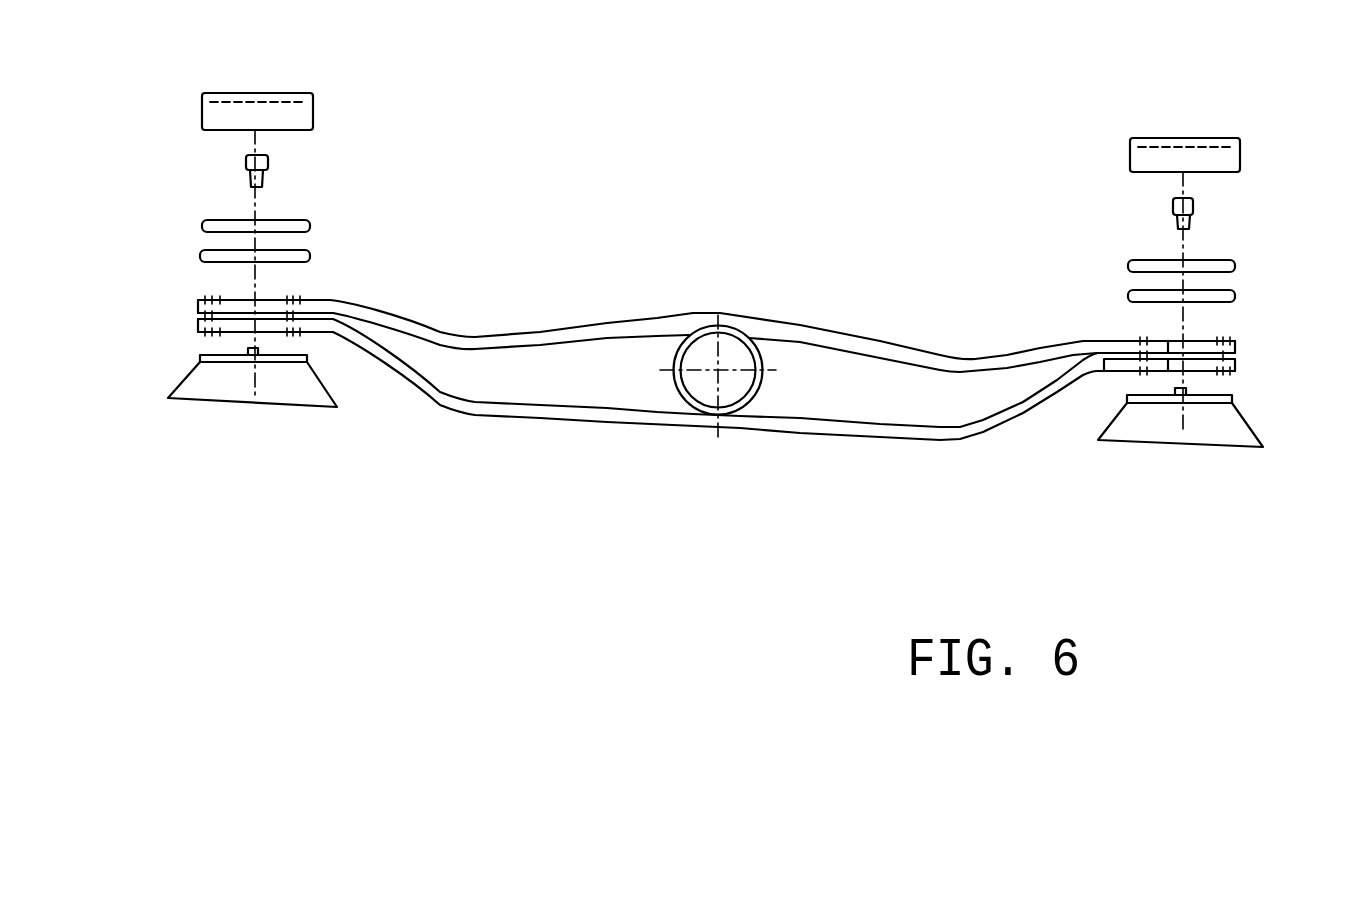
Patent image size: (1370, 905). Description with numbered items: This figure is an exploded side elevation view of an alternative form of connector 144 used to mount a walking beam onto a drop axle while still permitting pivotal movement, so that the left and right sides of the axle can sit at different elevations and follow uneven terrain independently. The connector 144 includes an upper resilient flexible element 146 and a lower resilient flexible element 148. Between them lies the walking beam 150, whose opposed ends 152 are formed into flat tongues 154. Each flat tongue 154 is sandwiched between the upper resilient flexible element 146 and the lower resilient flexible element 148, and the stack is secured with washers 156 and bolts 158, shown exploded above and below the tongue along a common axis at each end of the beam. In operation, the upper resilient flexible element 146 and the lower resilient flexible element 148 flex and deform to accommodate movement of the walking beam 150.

The connector 144 is at (1280, 640).
The upper resilient flexible element 146 is at (313, 112).
The lower resilient flexible element 148 is at (290, 408).
The walking beam 150 is at (748, 438).
The opposed ends 152 is at (243, 333).
The flat tongue 154 is at (1168, 342).
The washers 156 is at (208, 250).
The bolts 158 is at (247, 160).